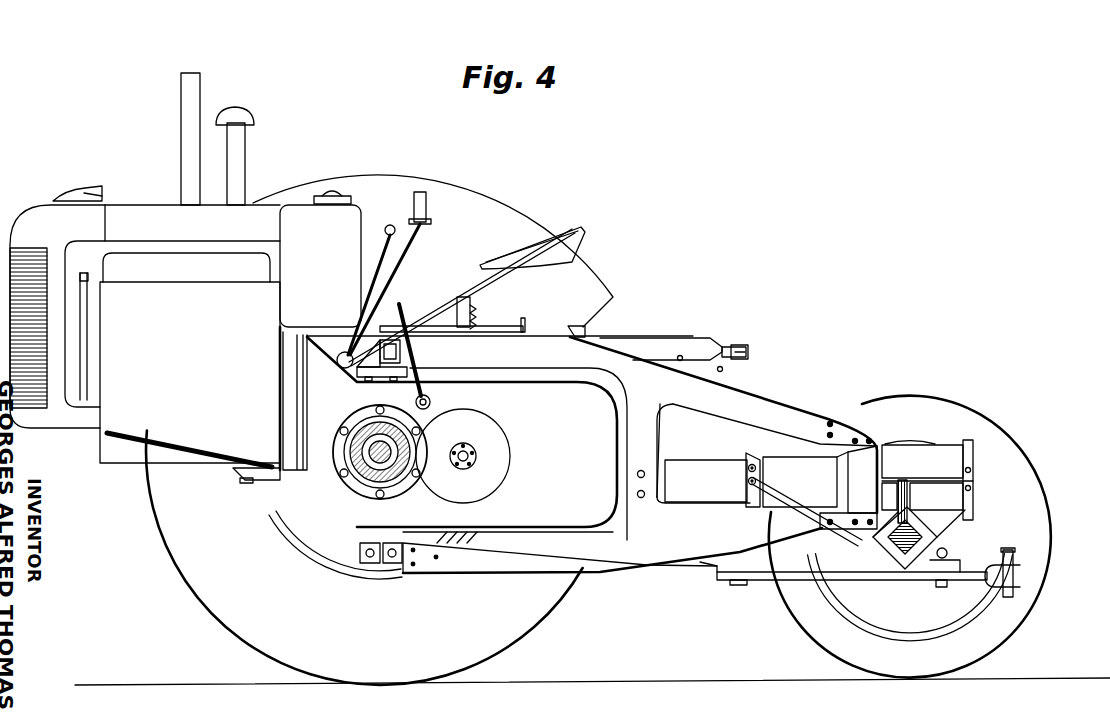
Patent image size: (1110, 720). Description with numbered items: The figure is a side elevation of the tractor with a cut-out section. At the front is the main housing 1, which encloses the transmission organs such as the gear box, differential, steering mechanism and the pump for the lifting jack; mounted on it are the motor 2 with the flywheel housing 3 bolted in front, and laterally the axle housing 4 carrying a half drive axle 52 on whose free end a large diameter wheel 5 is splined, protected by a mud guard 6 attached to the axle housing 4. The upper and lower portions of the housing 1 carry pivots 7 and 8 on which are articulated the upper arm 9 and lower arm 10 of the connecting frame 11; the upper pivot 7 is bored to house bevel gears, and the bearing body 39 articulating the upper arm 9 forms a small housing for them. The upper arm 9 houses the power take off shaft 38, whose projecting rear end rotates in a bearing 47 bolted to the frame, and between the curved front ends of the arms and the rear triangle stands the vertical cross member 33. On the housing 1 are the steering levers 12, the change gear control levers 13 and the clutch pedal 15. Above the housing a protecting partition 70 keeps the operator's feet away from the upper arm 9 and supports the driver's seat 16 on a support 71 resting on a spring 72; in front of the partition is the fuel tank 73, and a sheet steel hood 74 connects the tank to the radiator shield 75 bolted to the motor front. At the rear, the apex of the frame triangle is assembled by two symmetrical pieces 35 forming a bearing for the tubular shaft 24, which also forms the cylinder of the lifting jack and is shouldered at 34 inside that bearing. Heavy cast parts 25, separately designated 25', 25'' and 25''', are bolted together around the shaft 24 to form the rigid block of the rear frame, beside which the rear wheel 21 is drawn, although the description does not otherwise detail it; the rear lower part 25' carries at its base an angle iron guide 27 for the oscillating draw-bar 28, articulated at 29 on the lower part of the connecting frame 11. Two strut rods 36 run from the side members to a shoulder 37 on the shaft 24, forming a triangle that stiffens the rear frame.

The main housing 1 is at (560, 507).
The motor 2 is at (140, 423).
The flywheel housing 3 is at (287, 442).
The axle housing 4 is at (347, 458).
The wheels 5 is at (563, 608).
The mud guards 6 is at (500, 207).
The upper pivot 7 is at (386, 381).
The lower pivot 8 is at (367, 540).
The upper arm 9 is at (558, 350).
The lower arm 10 is at (506, 556).
The connecting frame 11 is at (697, 263).
The steering levers 12 is at (424, 197).
The change gear control levers 13 is at (380, 237).
The clutch pedal 15 is at (437, 368).
The driver's seat 16 is at (575, 241).
The front wheel 21 is at (953, 408).
The tubular shaft 24 is at (698, 477).
The heavy cast parts 25 is at (988, 484).
The rear lower part 25' is at (984, 472).
The cast part 25'' is at (973, 457).
The cast part 25''' is at (971, 468).
The angle iron guide 27 is at (940, 583).
The oscillating draw-bar 28 is at (803, 580).
The draw-bar articulation 29 is at (707, 564).
The vertical member 33 is at (652, 437).
The shoulder 34 is at (863, 464).
The symmetrical pieces 35 is at (893, 473).
The strut rods 36 is at (793, 503).
The shoulder 37 is at (762, 458).
The power take off shaft 38 is at (748, 353).
The bearing body 39 is at (402, 302).
The bearing 47 is at (705, 338).
The half drive axle 52 is at (380, 447).
The protecting partition 70 is at (393, 337).
The support 71 is at (552, 352).
The spring 72 is at (470, 323).
The fuel tank 73 is at (293, 210).
The sheet steel hood 74 is at (120, 210).
The radiator shield 75 is at (23, 247).